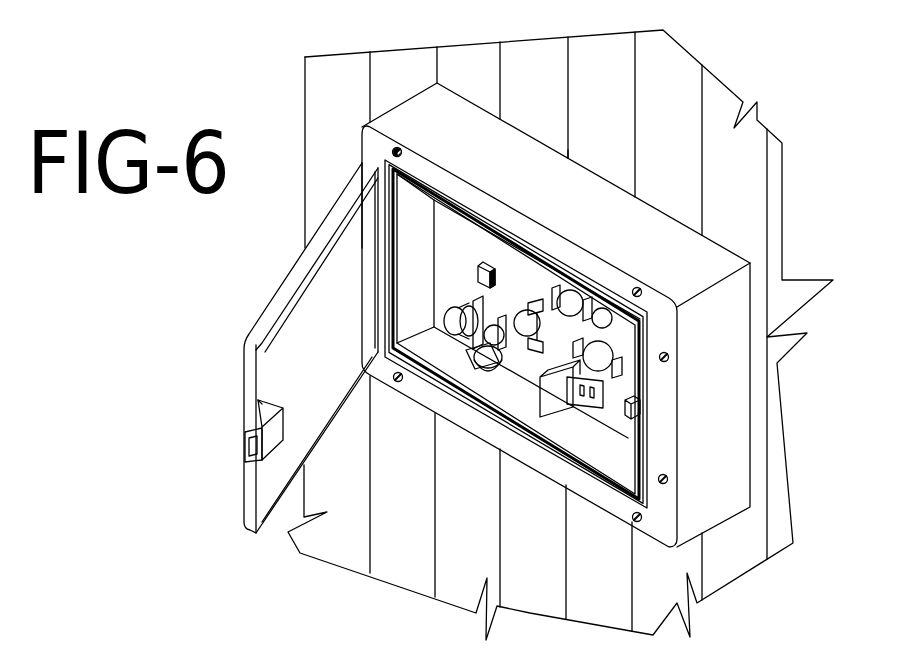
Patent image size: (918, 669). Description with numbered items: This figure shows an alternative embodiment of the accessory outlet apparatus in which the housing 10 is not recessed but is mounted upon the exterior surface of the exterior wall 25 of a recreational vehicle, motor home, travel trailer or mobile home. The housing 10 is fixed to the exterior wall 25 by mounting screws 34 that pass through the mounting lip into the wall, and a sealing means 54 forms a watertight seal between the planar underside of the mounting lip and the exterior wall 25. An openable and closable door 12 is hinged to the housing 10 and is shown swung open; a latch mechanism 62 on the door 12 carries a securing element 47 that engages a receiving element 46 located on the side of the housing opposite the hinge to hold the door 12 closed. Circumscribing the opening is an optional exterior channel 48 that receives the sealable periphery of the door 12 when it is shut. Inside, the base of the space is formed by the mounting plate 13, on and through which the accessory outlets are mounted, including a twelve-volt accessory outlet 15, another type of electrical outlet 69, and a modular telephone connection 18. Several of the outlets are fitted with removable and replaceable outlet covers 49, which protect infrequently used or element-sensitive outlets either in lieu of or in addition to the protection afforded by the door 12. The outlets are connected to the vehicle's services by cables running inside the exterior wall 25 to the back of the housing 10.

The housing 10 is at (595, 231).
The openable and closable door 12 is at (326, 381).
The mounting plate 13 is at (468, 254).
The twelve-volt accessory outlet 15 is at (600, 308).
The modular telephone connection 18 is at (484, 262).
The exterior wall 25 is at (611, 92).
The mounting screw 34 is at (394, 148).
The receiving element 46 is at (630, 411).
The securing element 47 is at (245, 448).
The exterior channel 48 is at (414, 181).
The outlet cover 49 is at (555, 288).
The sealing means 54 is at (569, 155).
The latch mechanism 62 is at (278, 430).
The electrical outlet 69 is at (587, 401).